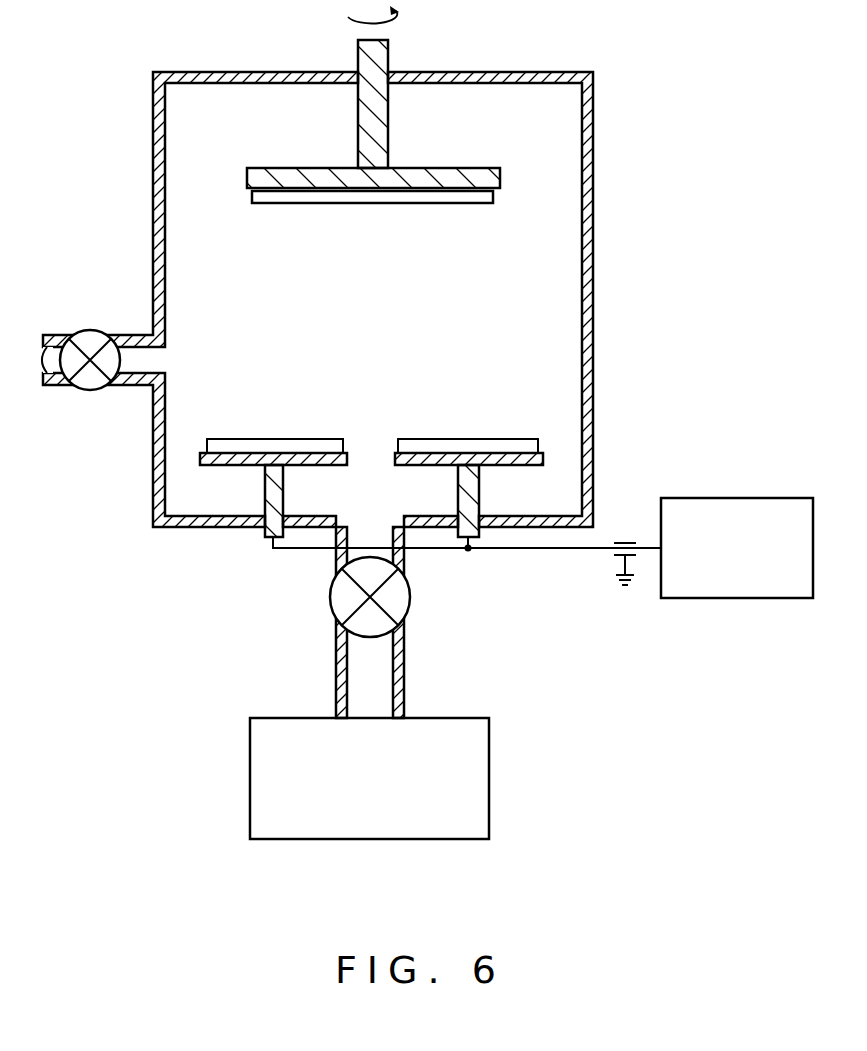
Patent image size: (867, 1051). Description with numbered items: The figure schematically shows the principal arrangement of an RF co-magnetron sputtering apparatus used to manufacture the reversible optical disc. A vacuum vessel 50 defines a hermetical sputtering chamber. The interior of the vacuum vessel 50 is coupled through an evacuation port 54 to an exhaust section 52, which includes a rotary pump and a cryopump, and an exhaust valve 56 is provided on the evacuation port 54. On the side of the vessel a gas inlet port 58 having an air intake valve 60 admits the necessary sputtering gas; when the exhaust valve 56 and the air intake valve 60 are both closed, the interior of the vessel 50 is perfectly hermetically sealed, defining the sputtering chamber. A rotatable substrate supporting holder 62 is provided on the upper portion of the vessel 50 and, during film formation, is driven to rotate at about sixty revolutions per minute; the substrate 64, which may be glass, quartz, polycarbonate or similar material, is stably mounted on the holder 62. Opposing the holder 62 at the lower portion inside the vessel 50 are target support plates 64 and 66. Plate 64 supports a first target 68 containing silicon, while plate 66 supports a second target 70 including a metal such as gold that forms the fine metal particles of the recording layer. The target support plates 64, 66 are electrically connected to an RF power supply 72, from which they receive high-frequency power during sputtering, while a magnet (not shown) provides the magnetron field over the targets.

The vacuum vessel 50 is at (593, 280).
The exhaust section 52 is at (489, 812).
The evacuation port 54 is at (405, 672).
The exhaust valve 56 is at (402, 590).
The gas inlet port 58 is at (136, 338).
The air intake valve 60 is at (84, 338).
The rotatable substrate supporting holder 62 is at (382, 58).
The substrate / target support plate 64 is at (493, 195).
The target support plate 66 is at (516, 466).
The first target 68 is at (305, 440).
The second target 70 is at (447, 440).
The RF power supply 72 is at (768, 508).